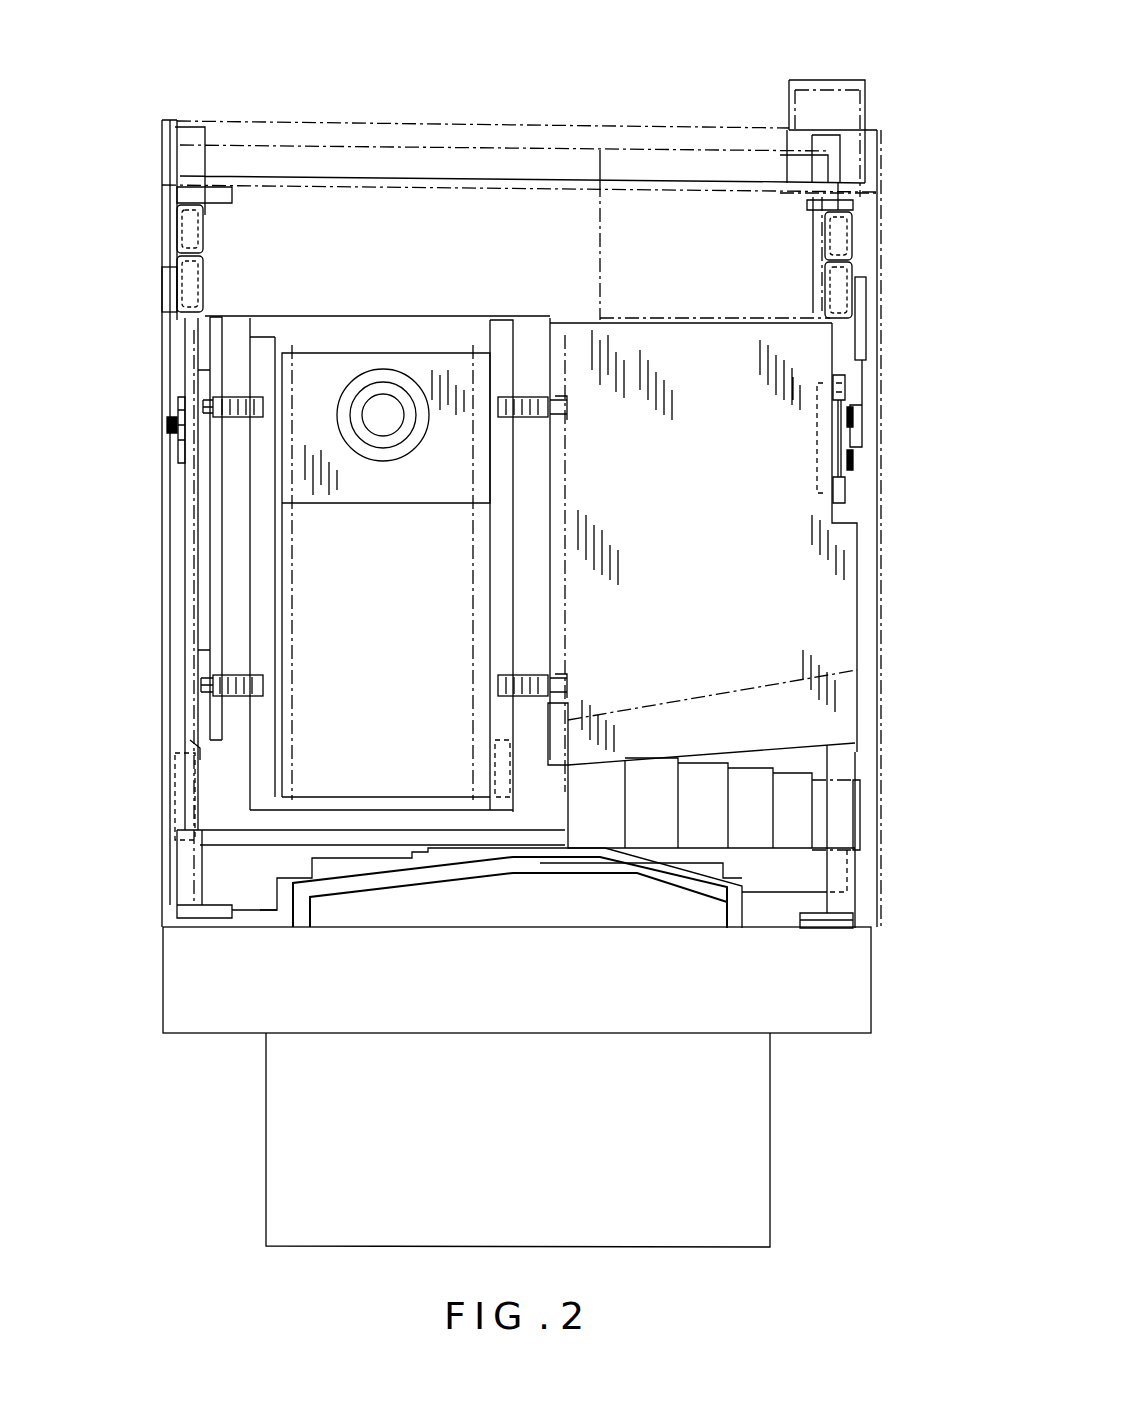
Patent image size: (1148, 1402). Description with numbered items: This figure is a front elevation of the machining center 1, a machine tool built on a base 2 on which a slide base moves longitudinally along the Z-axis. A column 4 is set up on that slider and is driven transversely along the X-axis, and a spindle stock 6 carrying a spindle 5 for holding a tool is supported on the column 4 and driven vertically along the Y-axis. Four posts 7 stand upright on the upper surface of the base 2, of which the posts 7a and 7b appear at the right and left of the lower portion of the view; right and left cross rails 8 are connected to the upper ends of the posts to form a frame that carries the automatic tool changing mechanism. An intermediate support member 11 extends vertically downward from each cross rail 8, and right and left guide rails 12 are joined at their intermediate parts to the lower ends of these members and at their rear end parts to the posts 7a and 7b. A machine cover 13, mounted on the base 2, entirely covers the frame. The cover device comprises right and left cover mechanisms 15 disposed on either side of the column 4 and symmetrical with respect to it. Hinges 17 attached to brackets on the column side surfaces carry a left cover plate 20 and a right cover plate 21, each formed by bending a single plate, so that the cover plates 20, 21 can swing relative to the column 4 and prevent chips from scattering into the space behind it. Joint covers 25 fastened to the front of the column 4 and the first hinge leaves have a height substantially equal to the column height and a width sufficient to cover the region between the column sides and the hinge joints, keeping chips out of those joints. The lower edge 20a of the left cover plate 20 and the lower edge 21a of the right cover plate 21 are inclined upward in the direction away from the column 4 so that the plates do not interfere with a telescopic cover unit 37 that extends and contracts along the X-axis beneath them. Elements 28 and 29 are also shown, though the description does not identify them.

The machining center 1 is at (877, 93).
The base 2 is at (813, 978).
The column 4 is at (318, 577).
The spindle 5 is at (383, 405).
The spindle stock 6 is at (297, 490).
The posts 7 is at (459, 879).
The post 7a is at (838, 903).
The post 7b is at (185, 873).
The cross rails 8 is at (180, 277).
The intermediate support member 11 is at (860, 345).
The guide rails 12 is at (175, 433).
The machine cover 13 is at (165, 190).
The cover mechanism 15 is at (667, 312).
The hinges 17 is at (578, 417).
The left cover plate 20 is at (200, 490).
The lower edge 20a is at (192, 745).
The right cover plate 21 is at (837, 547).
The lower edge 21a is at (783, 750).
The joint covers 25 is at (833, 677).
The stop member 28 is at (170, 418).
The adjusting screw 29 is at (850, 405).
The telescopic cover unit 37 is at (800, 812).